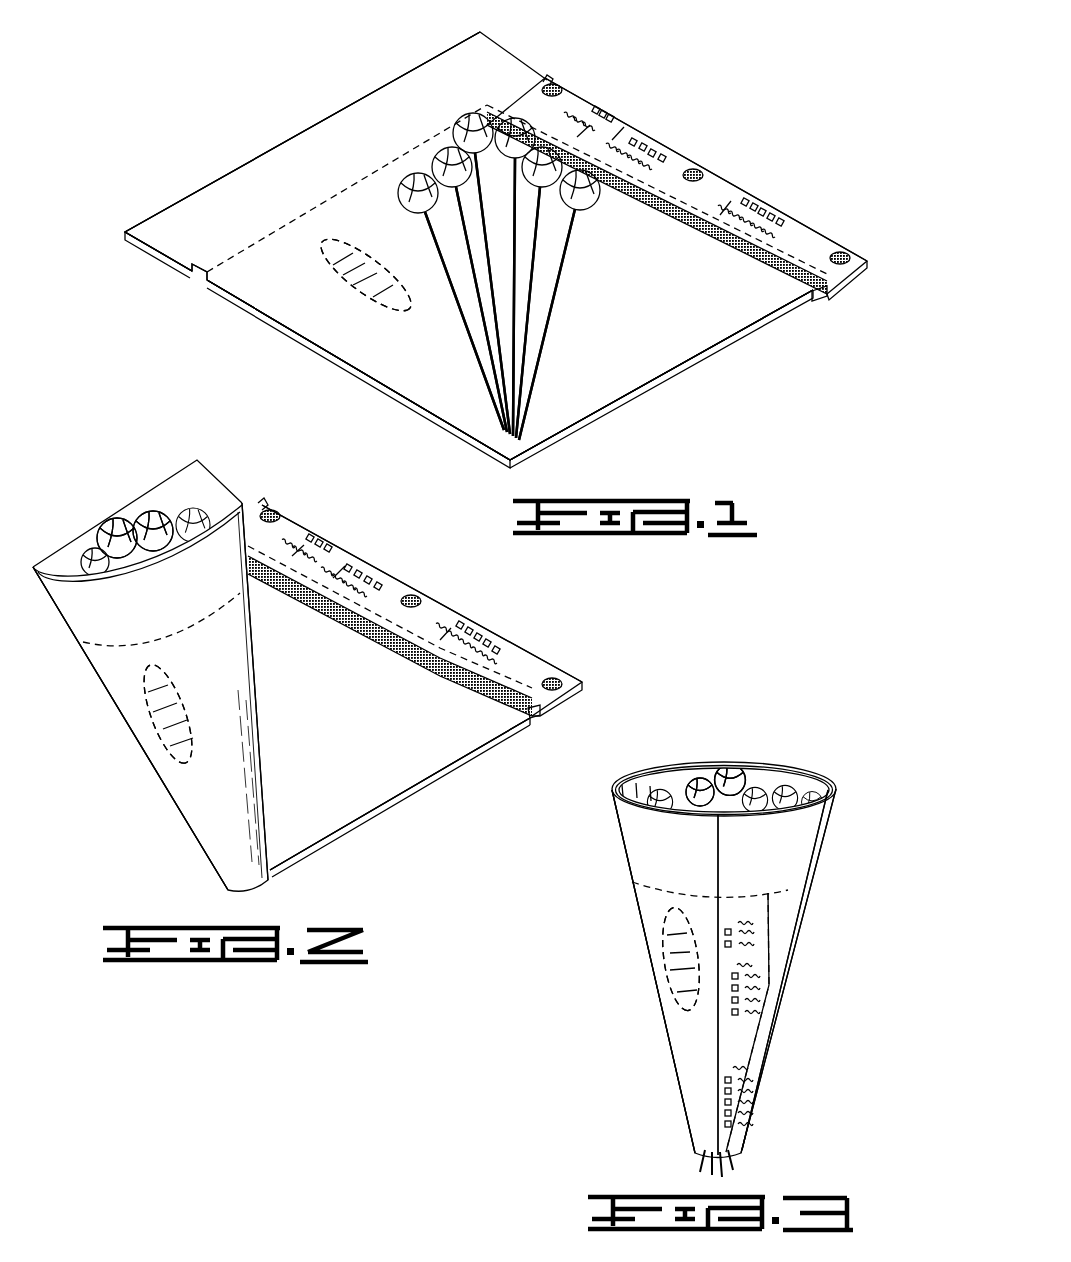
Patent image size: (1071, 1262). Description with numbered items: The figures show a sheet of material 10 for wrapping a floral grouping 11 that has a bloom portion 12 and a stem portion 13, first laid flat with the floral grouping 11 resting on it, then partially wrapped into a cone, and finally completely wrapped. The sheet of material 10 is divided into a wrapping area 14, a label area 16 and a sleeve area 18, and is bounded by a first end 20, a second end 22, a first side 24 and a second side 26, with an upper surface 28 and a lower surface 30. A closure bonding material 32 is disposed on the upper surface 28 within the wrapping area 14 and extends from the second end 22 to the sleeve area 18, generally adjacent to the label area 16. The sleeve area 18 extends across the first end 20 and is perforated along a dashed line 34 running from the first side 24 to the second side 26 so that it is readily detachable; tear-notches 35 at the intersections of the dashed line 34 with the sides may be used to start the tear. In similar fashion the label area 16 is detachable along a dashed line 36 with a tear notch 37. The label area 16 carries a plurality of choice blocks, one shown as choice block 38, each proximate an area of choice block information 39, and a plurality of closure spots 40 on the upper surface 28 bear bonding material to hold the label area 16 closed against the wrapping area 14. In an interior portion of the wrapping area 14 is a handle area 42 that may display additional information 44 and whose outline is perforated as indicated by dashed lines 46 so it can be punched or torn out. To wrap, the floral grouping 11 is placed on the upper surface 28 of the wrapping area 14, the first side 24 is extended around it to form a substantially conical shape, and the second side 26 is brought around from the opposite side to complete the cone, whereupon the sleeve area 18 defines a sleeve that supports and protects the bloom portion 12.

In FIG. 1, the sheet of material 10 is at (148, 212).
In FIG. 2, the sheet of material 10 is at (78, 520).
In FIG. 3, the sheet of material 10 is at (645, 763).
In FIG. 1, the floral grouping 11 is at (393, 193).
In FIG. 2, the floral grouping 11 is at (130, 517).
In FIG. 3, the floral grouping 11 is at (700, 785).
In FIG. 1, the bloom portion 12 is at (443, 142).
In FIG. 2, the bloom portion 12 is at (163, 507).
In FIG. 3, the bloom portion 12 is at (733, 770).
In FIG. 1, the stem portion 13 is at (463, 342).
In FIG. 3, the stem portion 13 is at (730, 1168).
In FIG. 1, the wrapping area 14 is at (613, 363).
In FIG. 2, the wrapping area 14 is at (365, 770).
In FIG. 3, the wrapping area 14 is at (698, 1080).
In FIG. 1, the label area 16 is at (628, 122).
In FIG. 2, the label area 16 is at (343, 548).
In FIG. 3, the label area 16 is at (740, 1037).
In FIG. 1, the sleeve area 18 is at (207, 215).
In FIG. 2, the sleeve area 18 is at (55, 612).
In FIG. 3, the sleeve area 18 is at (795, 840).
In FIG. 1, the first end 20 is at (297, 130).
In FIG. 1, the second end 22 is at (702, 362).
In FIG. 2, the second end 22 is at (452, 768).
In FIG. 1, the first side 24 is at (370, 382).
In FIG. 1, the second side 26 is at (757, 198).
In FIG. 2, the second side 26 is at (482, 620).
In FIG. 1, the upper surface 28 is at (552, 393).
In FIG. 2, the upper surface 28 is at (302, 803).
In FIG. 1, the lower surface 30 is at (467, 442).
In FIG. 2, the lower surface 30 is at (210, 835).
In FIG. 1, the closure bonding material 32 is at (784, 275).
In FIG. 2, the closure bonding material 32 is at (497, 700).
In FIG. 1, the dashed line 34 is at (377, 167).
In FIG. 2, the dashed line 34 is at (100, 652).
In FIG. 3, the dashed line 34 is at (788, 890).
In FIG. 1, the tear-notches 35 is at (205, 280).
In FIG. 2, the tear-notches 35 is at (263, 503).
In FIG. 1, the dashed line 36 is at (668, 182).
In FIG. 2, the dashed line 36 is at (385, 620).
In FIG. 3, the dashed line 36 is at (775, 968).
In FIG. 1, the tear notch 37 is at (822, 297).
In FIG. 2, the tear notch 37 is at (537, 718).
In FIG. 1, the choice block 38 is at (600, 118).
In FIG. 2, the choice block 38 is at (323, 545).
In FIG. 3, the choice block 38 is at (732, 930).
In FIG. 1, the choice block information area 39 is at (578, 115).
In FIG. 2, the choice block information area 39 is at (300, 540).
In FIG. 3, the choice block information area 39 is at (752, 930).
In FIG. 1, the closure spots 40 is at (557, 88).
In FIG. 2, the closure spots 40 is at (278, 513).
In FIG. 1, the handle area 42 is at (333, 248).
In FIG. 2, the handle area 42 is at (147, 678).
In FIG. 3, the handle area 42 is at (675, 923).
In FIG. 1, the additional information 44 is at (360, 282).
In FIG. 2, the additional information 44 is at (157, 717).
In FIG. 3, the additional information 44 is at (670, 970).
In FIG. 1, the dashed lines 46 is at (372, 303).
In FIG. 2, the dashed lines 46 is at (147, 770).
In FIG. 3, the dashed lines 46 is at (672, 1012).